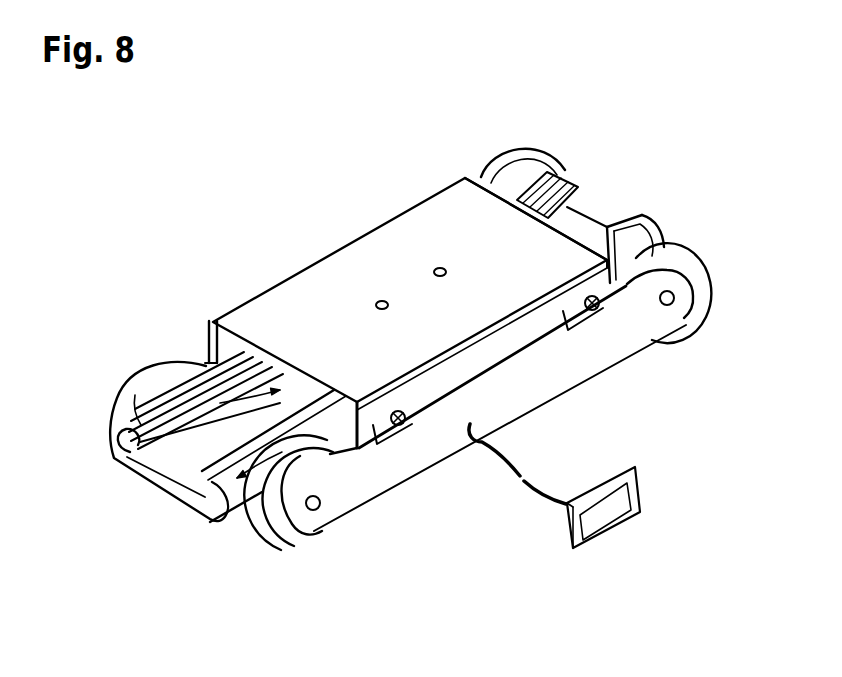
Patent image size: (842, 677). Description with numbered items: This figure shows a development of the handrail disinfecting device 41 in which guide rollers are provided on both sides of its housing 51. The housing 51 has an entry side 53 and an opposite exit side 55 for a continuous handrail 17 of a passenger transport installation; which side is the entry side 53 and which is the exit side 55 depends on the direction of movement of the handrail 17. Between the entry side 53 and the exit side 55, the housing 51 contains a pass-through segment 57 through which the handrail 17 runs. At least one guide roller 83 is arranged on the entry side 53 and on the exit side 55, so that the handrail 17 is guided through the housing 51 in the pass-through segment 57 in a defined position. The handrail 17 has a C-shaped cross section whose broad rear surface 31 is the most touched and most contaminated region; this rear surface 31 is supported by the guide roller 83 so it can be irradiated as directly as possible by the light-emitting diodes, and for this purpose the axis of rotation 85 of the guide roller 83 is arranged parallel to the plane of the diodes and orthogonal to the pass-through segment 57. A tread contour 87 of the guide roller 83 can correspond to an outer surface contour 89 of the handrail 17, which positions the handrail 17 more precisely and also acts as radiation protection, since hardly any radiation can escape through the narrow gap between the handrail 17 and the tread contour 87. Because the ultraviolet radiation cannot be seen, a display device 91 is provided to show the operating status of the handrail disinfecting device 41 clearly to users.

The handrail 17 is at (143, 415).
The rear surface 31 is at (165, 500).
The handrail disinfecting device 41 is at (327, 212).
The housing 51 is at (432, 183).
The entry side 53 is at (190, 350).
The exit side 55 is at (497, 150).
The pass-through segment 57 is at (197, 380).
The guide roller 83 is at (305, 543).
The axis of rotation 85 is at (320, 507).
The tread contour 87 is at (248, 518).
The outer surface contour 89 is at (300, 463).
The display device 91 is at (632, 522).